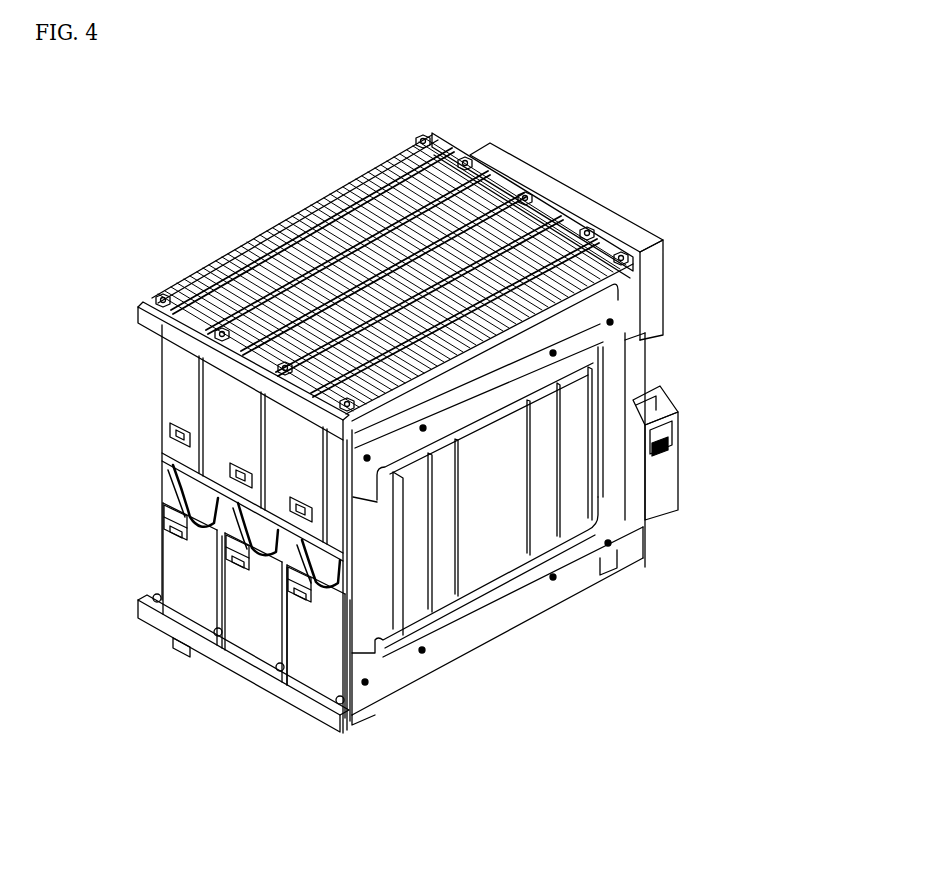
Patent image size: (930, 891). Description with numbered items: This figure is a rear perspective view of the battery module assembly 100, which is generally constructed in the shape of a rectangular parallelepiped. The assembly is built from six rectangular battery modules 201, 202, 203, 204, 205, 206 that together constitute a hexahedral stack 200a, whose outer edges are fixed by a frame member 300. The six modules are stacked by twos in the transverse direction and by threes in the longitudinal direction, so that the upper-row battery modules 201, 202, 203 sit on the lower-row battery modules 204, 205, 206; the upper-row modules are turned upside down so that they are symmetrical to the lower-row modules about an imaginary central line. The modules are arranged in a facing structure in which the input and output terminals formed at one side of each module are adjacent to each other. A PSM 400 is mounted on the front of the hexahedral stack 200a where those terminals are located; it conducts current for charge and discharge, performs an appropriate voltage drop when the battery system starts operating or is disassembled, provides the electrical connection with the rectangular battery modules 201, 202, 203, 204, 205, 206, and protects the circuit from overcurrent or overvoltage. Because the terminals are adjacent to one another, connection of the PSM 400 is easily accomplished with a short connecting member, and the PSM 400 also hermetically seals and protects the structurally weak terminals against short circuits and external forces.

The battery module assembly 100 is at (78, 113).
The hexahedral stack 200a is at (272, 212).
The rectangular battery module 201 is at (173, 372).
The rectangular battery module 202 is at (243, 403).
The rectangular battery module 203 is at (297, 453).
The rectangular battery module 204 is at (170, 560).
The rectangular battery module 205 is at (248, 623).
The rectangular battery module 206 is at (308, 665).
The frame member 300 is at (573, 563).
The PSM 400 is at (657, 363).